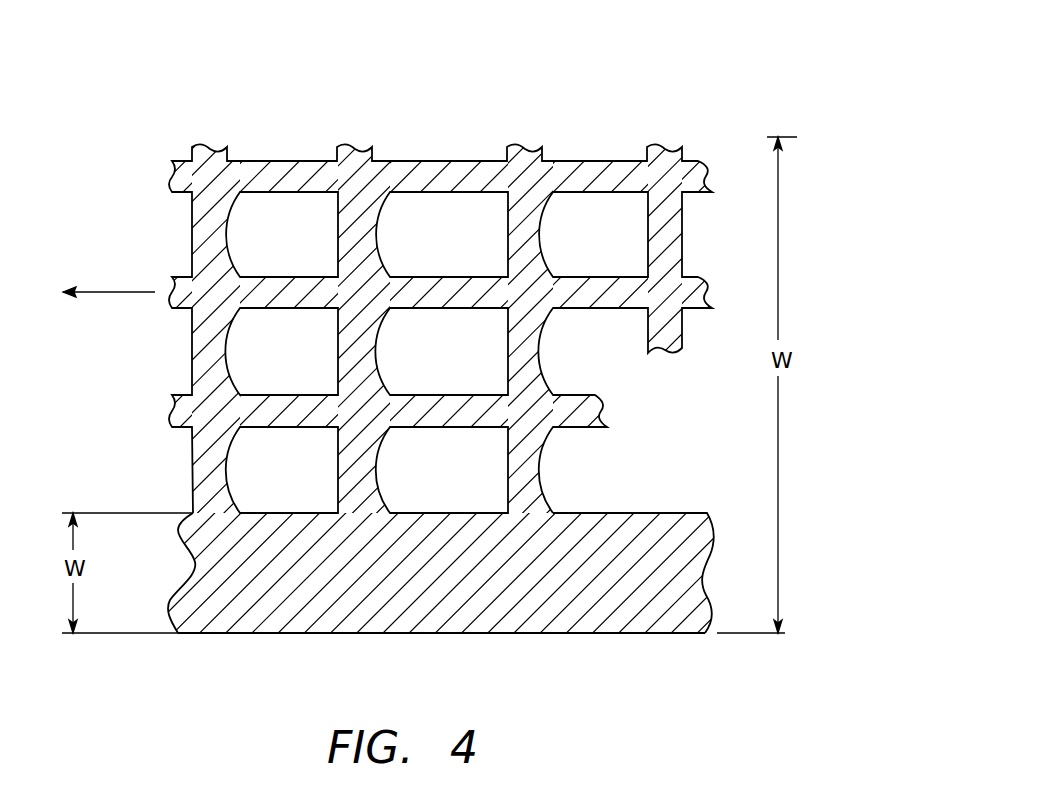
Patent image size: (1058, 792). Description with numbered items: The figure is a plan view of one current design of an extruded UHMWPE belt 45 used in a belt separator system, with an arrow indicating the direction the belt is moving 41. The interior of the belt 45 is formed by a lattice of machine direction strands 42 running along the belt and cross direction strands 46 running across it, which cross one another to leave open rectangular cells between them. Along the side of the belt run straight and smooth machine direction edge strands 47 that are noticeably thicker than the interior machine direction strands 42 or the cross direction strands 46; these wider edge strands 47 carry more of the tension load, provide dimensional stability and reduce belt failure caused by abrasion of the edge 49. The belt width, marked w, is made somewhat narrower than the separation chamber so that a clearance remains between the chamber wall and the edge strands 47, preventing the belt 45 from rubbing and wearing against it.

The direction the belt is moving 41 is at (118, 292).
The machine direction strands 42 is at (317, 162).
The UHMWPE belt 45 is at (623, 87).
The cross direction strands 46 is at (338, 244).
The machine direction edge strands 47 is at (628, 513).
The edge 49 is at (373, 633).